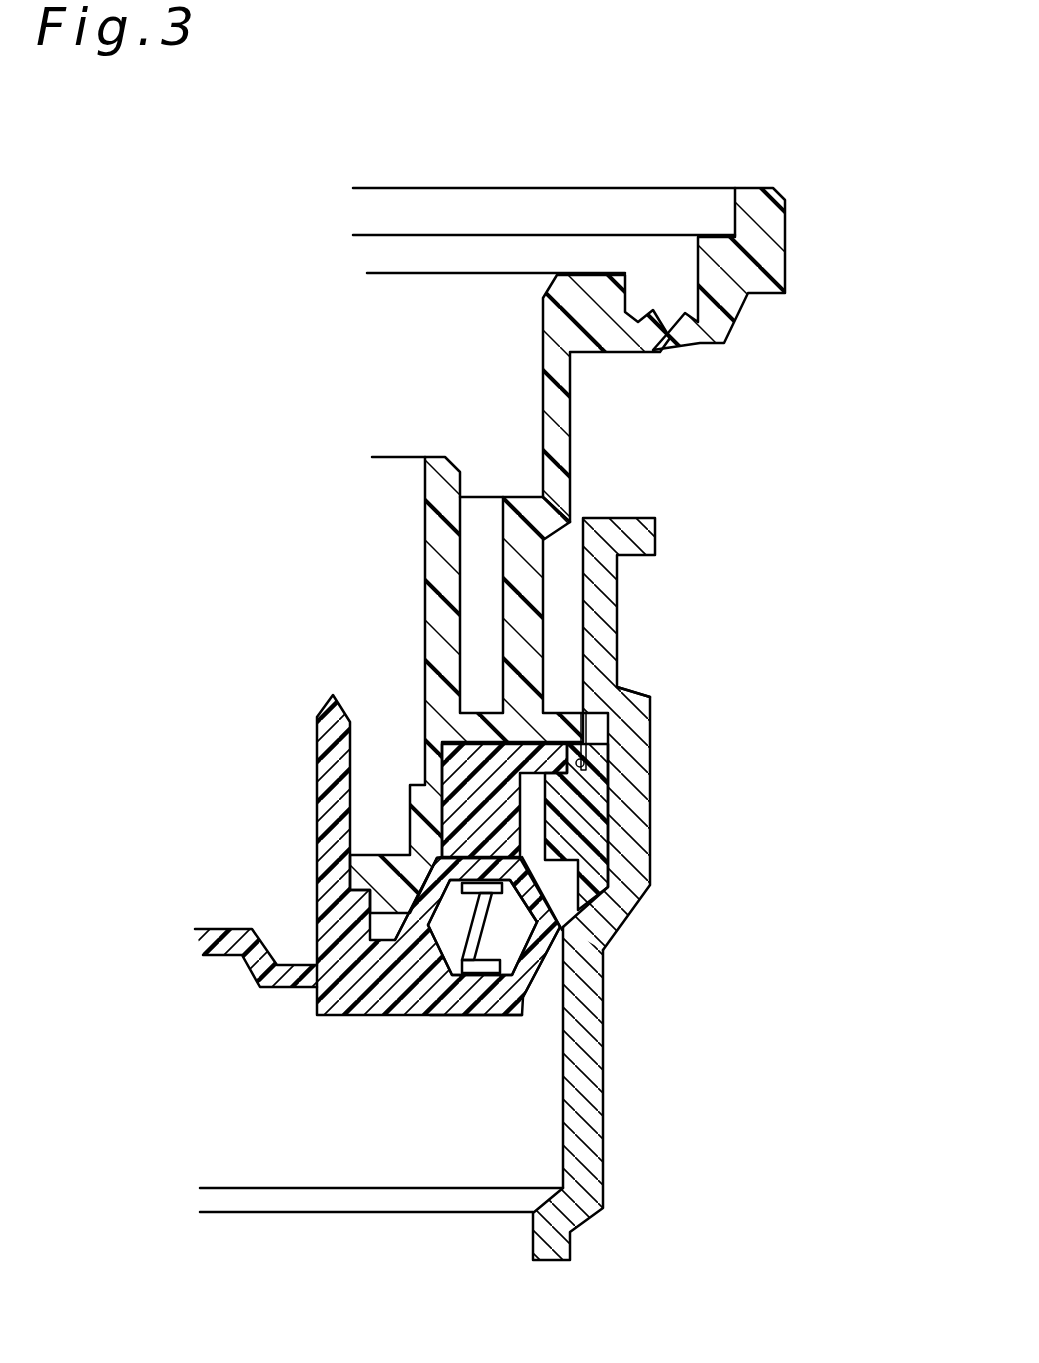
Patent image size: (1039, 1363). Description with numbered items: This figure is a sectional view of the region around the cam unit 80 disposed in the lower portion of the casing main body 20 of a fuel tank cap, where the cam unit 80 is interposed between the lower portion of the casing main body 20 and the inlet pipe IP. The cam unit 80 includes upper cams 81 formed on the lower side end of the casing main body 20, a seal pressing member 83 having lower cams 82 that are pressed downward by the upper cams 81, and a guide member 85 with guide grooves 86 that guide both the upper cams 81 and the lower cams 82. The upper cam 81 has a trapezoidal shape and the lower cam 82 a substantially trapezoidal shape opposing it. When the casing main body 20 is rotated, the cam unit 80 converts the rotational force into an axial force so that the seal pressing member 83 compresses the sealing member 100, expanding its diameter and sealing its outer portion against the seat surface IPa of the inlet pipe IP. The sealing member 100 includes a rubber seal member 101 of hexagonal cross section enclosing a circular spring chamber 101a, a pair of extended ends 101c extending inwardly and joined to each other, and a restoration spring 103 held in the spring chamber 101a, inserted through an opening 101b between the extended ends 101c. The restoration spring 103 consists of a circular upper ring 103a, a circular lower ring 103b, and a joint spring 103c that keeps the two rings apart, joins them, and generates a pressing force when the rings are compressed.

The casing main body 20 is at (570, 453).
The cam unit 80 is at (739, 734).
The upper cam 81 is at (724, 655).
The lower cam 82 is at (600, 722).
The seal pressing member 83 is at (620, 827).
The guide member 85 is at (598, 790).
The guide groove 86 is at (590, 752).
The sealing member 100 is at (558, 888).
The rubber seal member 101 is at (389, 808).
The spring chamber 101a is at (486, 973).
The opening 101b is at (415, 925).
The extended end 101c is at (372, 920).
The restoration spring 103 is at (642, 948).
The upper ring 103a is at (560, 914).
The lower ring 103b is at (532, 986).
The joint spring 103c is at (500, 942).
The inlet pipe IP is at (590, 1135).
The seat surface IPa is at (568, 1020).